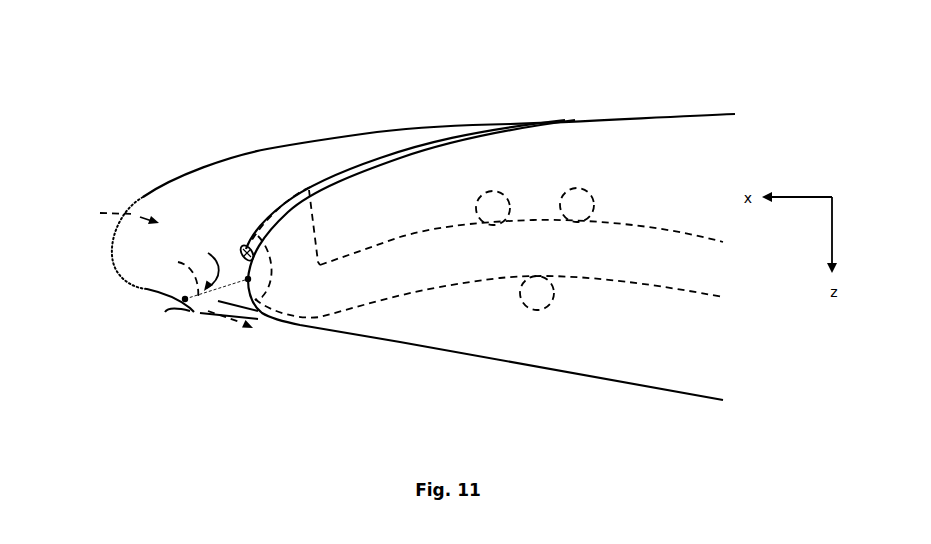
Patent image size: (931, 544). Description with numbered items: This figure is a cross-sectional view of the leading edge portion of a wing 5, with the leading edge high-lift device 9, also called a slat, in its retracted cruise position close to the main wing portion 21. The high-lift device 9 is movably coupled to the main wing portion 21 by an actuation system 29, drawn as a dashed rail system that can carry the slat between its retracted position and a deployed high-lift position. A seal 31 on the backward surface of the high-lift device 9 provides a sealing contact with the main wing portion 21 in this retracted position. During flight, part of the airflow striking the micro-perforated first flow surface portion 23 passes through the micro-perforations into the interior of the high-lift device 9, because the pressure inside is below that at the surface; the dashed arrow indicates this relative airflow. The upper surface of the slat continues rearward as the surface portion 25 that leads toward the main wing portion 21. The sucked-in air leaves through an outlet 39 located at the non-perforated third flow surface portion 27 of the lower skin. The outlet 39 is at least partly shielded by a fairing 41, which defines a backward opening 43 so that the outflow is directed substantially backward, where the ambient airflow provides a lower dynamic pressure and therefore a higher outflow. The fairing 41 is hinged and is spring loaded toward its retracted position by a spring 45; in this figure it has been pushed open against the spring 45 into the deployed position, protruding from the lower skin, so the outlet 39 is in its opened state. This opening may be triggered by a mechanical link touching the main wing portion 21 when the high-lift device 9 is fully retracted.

The wing 5 is at (566, 86).
The leading edge high-lift device 9 is at (298, 165).
The main wing portion 21 is at (567, 342).
The first flow surface portion 23 is at (112, 240).
The wing upper skin 25 is at (377, 132).
The third flow surface portion 27 is at (150, 290).
The actuation system 29 is at (410, 293).
The seal 31 is at (244, 256).
The outlet 39 is at (202, 259).
The fairing 41 is at (165, 312).
The backward opening 43 is at (200, 316).
The spring 45 is at (183, 297).